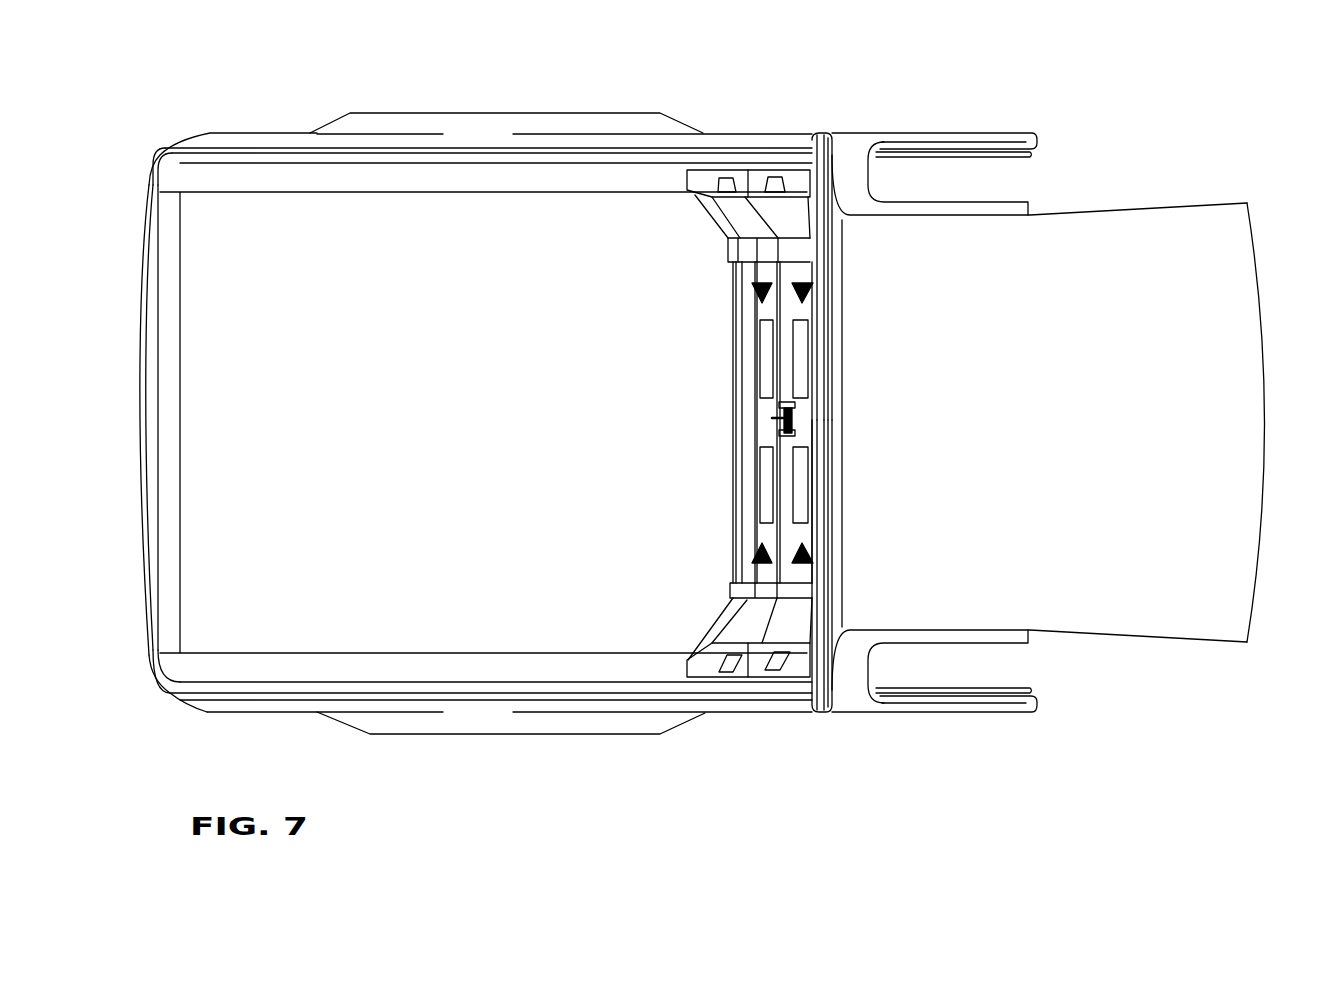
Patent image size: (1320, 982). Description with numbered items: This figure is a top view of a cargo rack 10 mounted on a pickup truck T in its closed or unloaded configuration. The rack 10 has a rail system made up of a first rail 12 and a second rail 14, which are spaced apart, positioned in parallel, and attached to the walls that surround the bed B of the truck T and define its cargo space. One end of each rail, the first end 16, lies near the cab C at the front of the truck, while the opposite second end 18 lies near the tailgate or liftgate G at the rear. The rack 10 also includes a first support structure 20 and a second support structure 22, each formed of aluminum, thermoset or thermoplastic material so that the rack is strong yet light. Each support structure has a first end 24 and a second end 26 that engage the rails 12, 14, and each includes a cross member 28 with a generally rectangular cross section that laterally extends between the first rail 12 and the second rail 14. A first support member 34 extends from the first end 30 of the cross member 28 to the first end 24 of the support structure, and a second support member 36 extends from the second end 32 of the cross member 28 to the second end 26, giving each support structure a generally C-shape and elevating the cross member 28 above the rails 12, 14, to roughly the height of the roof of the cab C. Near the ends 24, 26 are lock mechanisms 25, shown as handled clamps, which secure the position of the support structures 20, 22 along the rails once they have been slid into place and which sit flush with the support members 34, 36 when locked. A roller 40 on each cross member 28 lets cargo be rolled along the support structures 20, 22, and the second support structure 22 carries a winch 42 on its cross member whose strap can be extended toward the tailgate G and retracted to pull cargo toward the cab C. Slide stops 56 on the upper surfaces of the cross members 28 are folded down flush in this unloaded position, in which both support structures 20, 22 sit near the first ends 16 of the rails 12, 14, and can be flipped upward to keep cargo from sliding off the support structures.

The rack 10 is at (751, 89).
The first rail 12 is at (318, 172).
The second rail 14 is at (397, 670).
The first end of first rail 16 is at (828, 156).
The second end of first rail 18 is at (180, 172).
The first support structure 20 is at (746, 460).
The second support structure 22 is at (830, 470).
The first end of first support structure 24 is at (718, 178).
The lock mechanism 25 is at (790, 186).
The second end of first support structure 26 is at (710, 680).
The cross member 28 is at (755, 403).
The first end of cross member 30 is at (763, 267).
The second end of cross member 32 is at (733, 588).
The first support member 34 is at (740, 207).
The second support member 36 is at (735, 643).
The roller 40 is at (768, 357).
The winch 42 is at (795, 417).
The slide stop 56 is at (760, 296).
The tailgate or liftgate G is at (165, 371).
The bed B is at (283, 491).
The cab C is at (1042, 425).
The truck T is at (1142, 158).